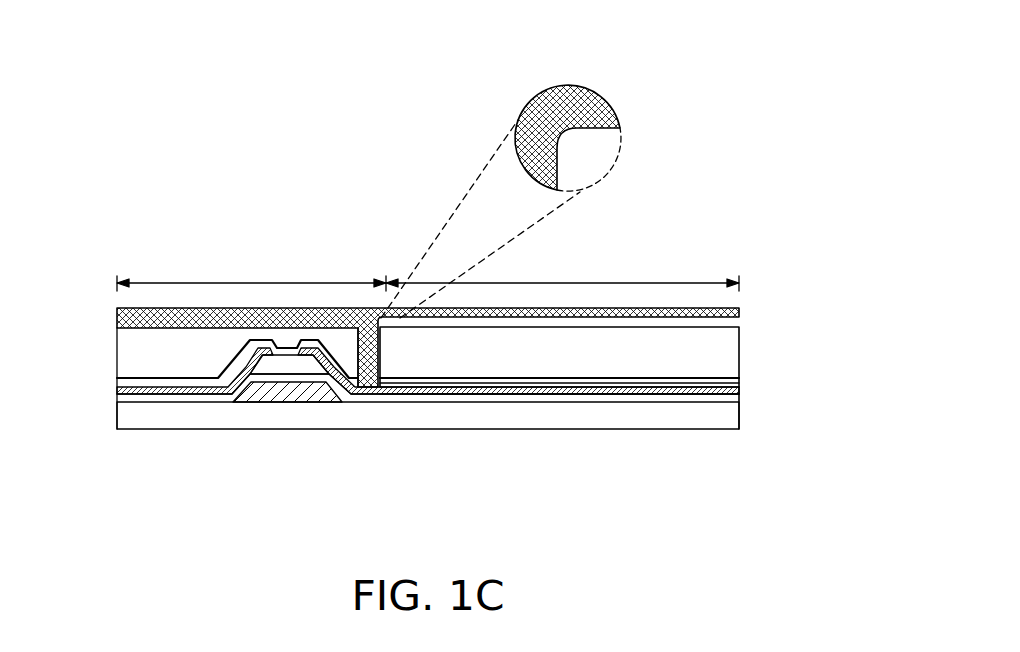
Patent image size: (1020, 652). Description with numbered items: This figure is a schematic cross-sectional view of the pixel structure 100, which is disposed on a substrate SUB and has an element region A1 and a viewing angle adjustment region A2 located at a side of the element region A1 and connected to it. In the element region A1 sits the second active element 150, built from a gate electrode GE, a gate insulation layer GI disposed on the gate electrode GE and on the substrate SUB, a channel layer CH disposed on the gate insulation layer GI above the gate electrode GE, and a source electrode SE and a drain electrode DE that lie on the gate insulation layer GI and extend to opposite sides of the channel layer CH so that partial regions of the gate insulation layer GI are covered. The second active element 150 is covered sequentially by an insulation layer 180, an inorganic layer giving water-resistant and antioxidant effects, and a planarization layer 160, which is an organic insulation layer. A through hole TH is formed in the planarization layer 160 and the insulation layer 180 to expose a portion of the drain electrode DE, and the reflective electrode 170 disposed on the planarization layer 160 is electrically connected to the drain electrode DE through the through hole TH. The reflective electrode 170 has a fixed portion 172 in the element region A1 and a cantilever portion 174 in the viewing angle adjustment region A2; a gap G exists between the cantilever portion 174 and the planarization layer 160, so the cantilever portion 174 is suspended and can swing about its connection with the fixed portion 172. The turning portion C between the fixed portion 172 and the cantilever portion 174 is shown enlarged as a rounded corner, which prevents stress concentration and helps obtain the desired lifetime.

The pixel structure 100 is at (427, 308).
The second active element 150 is at (428, 443).
The planarization layer 160 is at (720, 349).
The reflective electrode 170 is at (428, 232).
The fixed portion 172 is at (373, 308).
The cantilever portion 174 is at (558, 198).
The insulation layer 180 is at (723, 384).
The substrate SUB is at (722, 416).
The gate electrode GE is at (267, 390).
The gate insulation layer GI is at (398, 400).
The channel layer CH is at (288, 365).
The source electrode SE is at (197, 394).
The drain electrode DE is at (518, 418).
The through hole TH is at (370, 345).
The gap G is at (722, 322).
The turning portion C is at (568, 142).
The element region A1 is at (251, 271).
The viewing angle adjustment region A2 is at (562, 272).